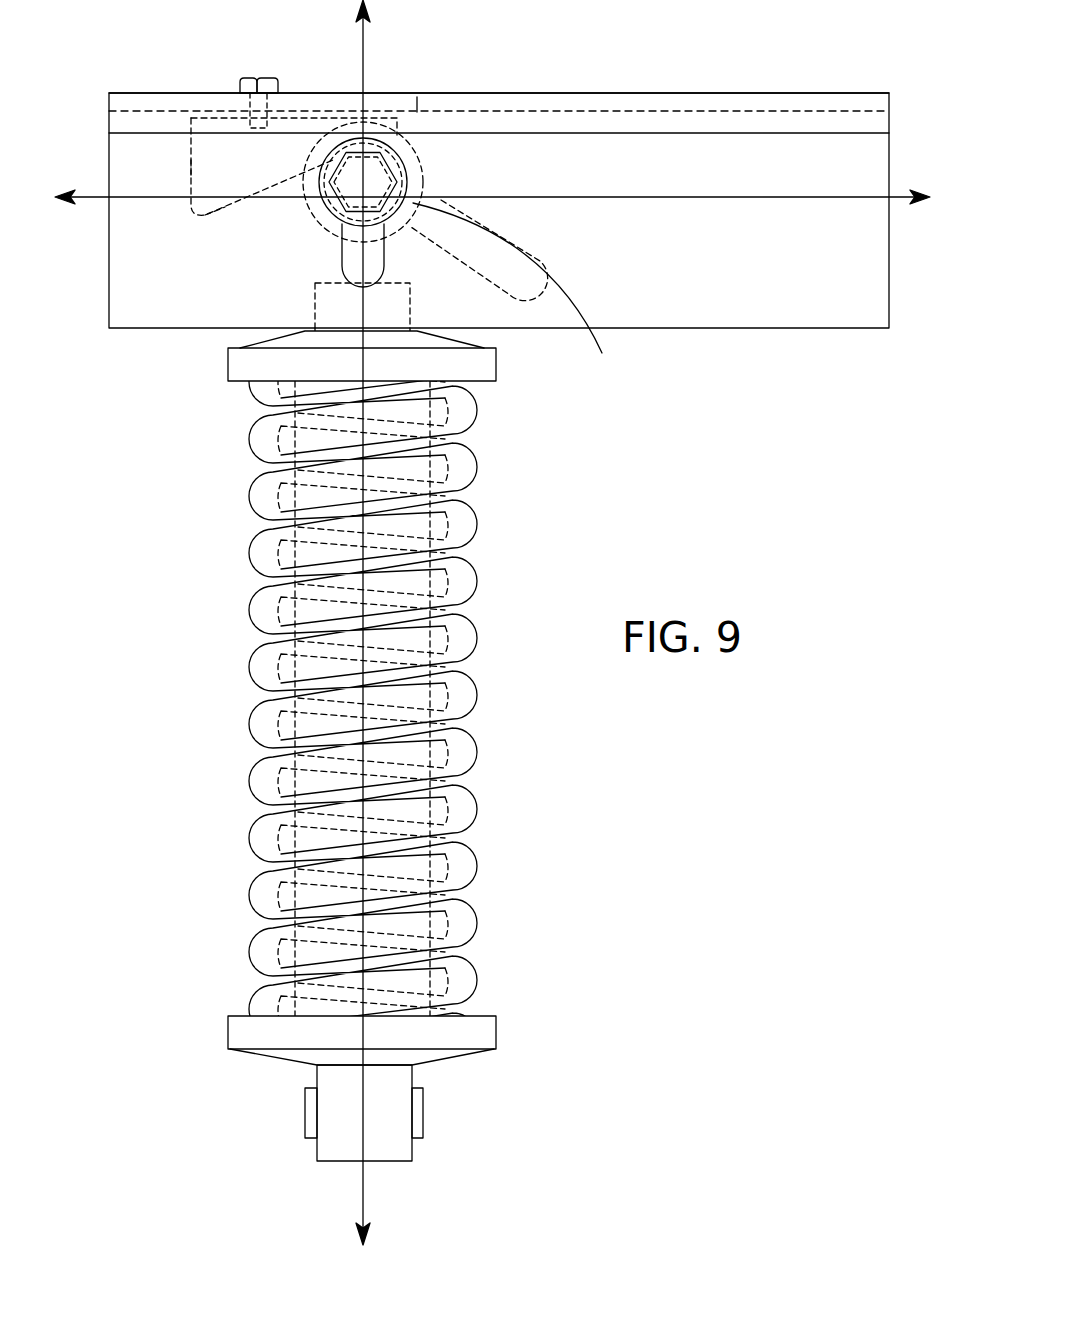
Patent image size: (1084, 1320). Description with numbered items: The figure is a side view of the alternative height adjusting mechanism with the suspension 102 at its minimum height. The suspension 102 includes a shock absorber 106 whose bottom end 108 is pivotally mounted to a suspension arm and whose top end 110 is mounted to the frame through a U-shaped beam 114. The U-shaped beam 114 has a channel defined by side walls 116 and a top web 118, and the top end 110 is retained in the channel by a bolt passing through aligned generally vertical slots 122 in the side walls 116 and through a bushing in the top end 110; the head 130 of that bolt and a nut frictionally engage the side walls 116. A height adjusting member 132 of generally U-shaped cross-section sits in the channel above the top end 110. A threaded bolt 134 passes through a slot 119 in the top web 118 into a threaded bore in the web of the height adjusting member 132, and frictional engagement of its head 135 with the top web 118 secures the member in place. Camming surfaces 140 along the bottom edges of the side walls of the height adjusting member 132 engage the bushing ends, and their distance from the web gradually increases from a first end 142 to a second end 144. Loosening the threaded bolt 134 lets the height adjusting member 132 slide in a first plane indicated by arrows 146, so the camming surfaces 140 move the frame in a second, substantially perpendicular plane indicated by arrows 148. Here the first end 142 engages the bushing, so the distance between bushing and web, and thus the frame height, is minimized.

The suspension 102 is at (238, 619).
The shock absorber 106 is at (460, 822).
The bottom end 108 is at (427, 1123).
The top end 110 is at (515, 289).
The U-shaped beam 114 is at (778, 92).
The side walls 116 is at (755, 313).
The top web 118 is at (672, 93).
The slot 119 is at (420, 103).
The vertical slots 122 is at (497, 350).
The head 130 is at (376, 183).
The height adjusting member 132 is at (203, 130).
The threaded bolt 134 is at (257, 110).
The head 135 is at (268, 78).
The camming surfaces 140 is at (217, 203).
The first end 142 is at (377, 158).
The second end 144 is at (190, 167).
The arrows 146 is at (893, 195).
The arrows 148 is at (366, 80).